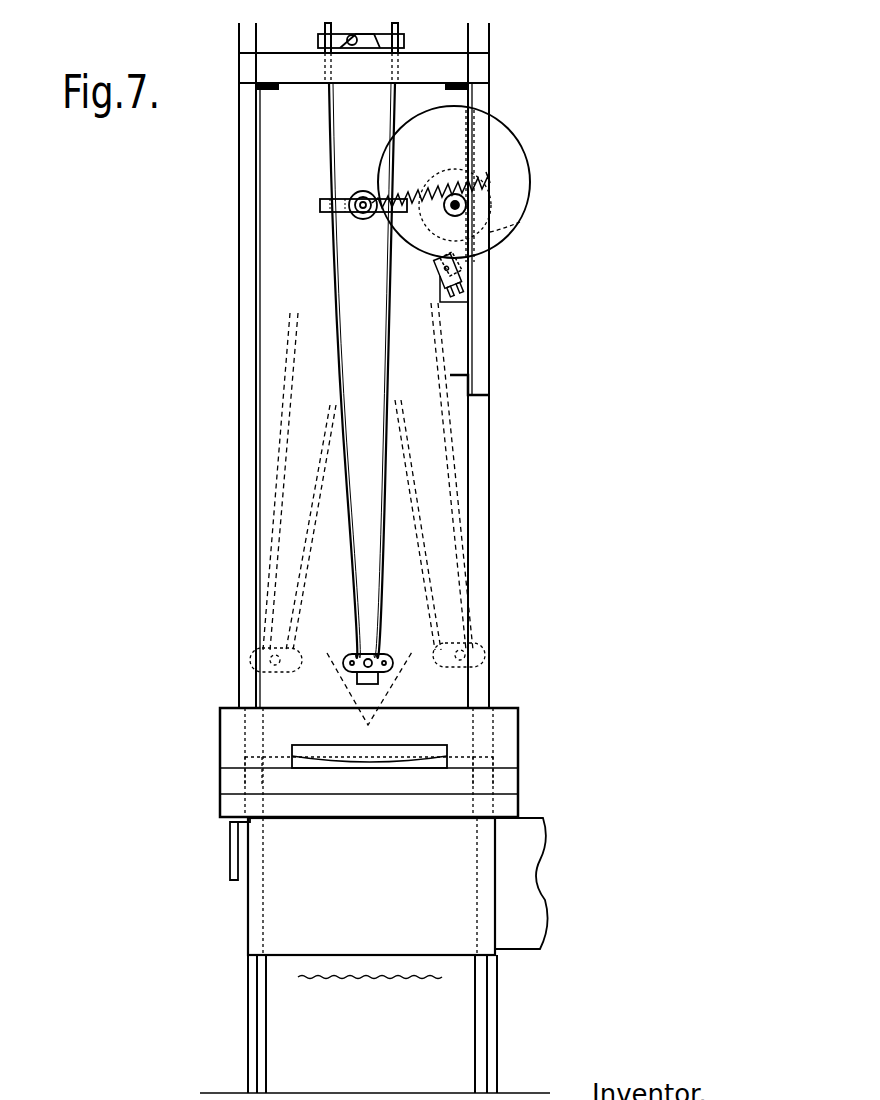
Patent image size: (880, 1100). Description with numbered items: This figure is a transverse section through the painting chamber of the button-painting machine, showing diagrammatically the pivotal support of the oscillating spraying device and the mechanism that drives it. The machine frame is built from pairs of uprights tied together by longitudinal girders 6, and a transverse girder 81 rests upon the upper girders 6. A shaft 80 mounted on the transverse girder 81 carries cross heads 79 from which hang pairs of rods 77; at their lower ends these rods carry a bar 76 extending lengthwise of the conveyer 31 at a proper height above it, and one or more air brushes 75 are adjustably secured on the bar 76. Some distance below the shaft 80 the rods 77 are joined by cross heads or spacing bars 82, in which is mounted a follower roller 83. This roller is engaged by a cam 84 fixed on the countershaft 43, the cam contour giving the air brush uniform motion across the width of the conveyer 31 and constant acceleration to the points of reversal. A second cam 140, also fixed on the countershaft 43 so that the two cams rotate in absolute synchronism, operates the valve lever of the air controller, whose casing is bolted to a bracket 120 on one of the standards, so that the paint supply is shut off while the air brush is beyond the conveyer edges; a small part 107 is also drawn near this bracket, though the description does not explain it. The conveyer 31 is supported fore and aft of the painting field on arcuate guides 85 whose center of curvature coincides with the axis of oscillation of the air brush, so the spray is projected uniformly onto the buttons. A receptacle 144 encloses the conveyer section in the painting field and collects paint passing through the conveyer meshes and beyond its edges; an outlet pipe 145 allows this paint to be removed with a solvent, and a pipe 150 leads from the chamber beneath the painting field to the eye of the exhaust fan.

The girders 6 is at (263, 86).
The conveyer 31 is at (375, 754).
The countershaft 43 is at (462, 204).
The air brush 75 is at (345, 686).
The bar 76 is at (374, 656).
The rods 77 is at (340, 380).
The cross heads 79 is at (381, 45).
The shaft 80 is at (320, 44).
The transverse girder 81 is at (427, 57).
The cross heads or spacing bars 82 is at (342, 218).
The follower roller 83 is at (362, 190).
The cam 84 is at (522, 143).
The arcuate guides 85 is at (408, 764).
The pawl 107 is at (460, 265).
The bracket 120 is at (464, 272).
The cam 140 is at (520, 222).
The receptacle 144 is at (508, 734).
The outlet pipe 145 is at (229, 854).
The pipe 150 is at (528, 872).